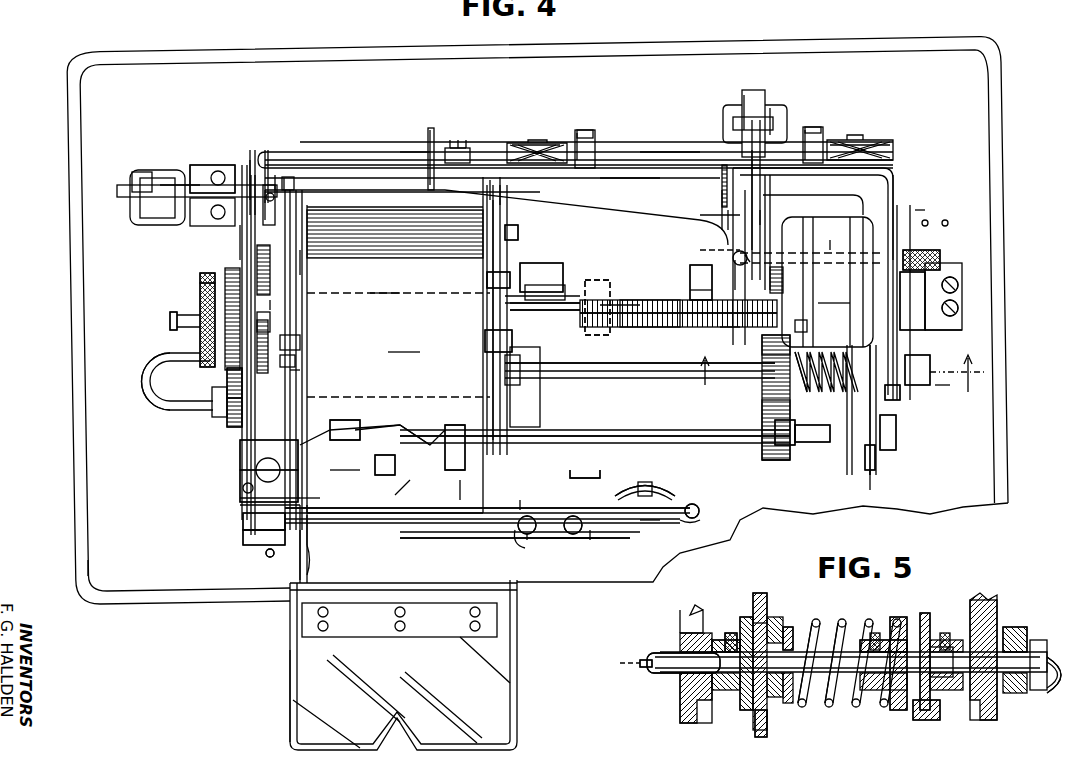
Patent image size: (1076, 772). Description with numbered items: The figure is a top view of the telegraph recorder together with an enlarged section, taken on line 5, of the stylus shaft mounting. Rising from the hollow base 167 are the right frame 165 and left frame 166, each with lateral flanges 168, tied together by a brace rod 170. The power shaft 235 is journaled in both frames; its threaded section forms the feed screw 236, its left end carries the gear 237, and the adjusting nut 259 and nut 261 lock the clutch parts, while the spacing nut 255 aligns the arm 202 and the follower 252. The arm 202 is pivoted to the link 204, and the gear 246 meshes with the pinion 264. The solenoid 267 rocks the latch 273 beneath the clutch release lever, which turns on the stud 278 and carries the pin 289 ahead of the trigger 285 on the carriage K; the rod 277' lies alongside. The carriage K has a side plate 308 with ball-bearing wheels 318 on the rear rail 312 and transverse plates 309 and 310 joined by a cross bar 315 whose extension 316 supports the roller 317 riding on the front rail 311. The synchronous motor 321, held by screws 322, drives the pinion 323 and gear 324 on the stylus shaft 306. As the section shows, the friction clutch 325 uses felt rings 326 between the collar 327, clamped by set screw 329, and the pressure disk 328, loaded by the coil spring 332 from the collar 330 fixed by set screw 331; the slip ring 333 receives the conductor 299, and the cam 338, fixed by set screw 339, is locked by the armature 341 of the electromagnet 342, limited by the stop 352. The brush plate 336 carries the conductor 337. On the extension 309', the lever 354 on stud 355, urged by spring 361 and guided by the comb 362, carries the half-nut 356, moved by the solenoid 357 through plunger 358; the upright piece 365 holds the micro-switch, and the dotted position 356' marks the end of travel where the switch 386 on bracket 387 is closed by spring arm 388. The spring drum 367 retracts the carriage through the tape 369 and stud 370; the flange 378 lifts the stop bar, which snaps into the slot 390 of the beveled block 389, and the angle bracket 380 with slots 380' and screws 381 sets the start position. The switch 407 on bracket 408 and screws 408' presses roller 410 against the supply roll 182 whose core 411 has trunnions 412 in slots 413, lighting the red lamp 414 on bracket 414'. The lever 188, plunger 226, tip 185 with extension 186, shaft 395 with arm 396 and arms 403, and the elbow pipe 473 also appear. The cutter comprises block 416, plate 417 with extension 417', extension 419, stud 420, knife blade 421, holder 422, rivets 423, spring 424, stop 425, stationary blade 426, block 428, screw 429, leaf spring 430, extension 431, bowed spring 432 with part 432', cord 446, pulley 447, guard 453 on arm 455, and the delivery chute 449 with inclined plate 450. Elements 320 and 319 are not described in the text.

In FIG. 4, the solenoid 267 is at (135, 172).
In FIG. 4, the latch 273 is at (172, 190).
In FIG. 4, the follower 252 is at (250, 185).
In FIG. 4, the switch 386 is at (265, 190).
In FIG. 4, the spring arm 388 is at (278, 175).
In FIG. 4, the trigger 285 is at (435, 150).
In FIG. 4, the bracket 387 is at (470, 130).
In FIG. 4, the ball-bearing wheels 318 is at (850, 142).
In FIG. 4, the block 320 is at (810, 130).
In FIG. 4, the rear rail 312 is at (665, 148).
In FIG. 4, the plunger 358 is at (742, 100).
In FIG. 4, the solenoid 357 is at (785, 108).
In FIG. 4, the carriage K is at (895, 175).
In FIG. 4, the transverse plate 310 is at (893, 205).
In FIG. 5, the transverse plate 310 is at (990, 612).
In FIG. 4, the screws 322 is at (912, 228).
In FIG. 4, the comb 362 is at (740, 260).
In FIG. 4, the pin 289 is at (428, 175).
In FIG. 4, the rod 277' is at (402, 200).
In FIG. 4, the stud 278 is at (508, 185).
In FIG. 4, the side plate 308 is at (650, 180).
In FIG. 4, the spring 361 is at (735, 240).
In FIG. 4, the upright piece 365 is at (725, 212).
In FIG. 4, the lever 354 is at (760, 190).
In FIG. 4, the stud 355 is at (764, 215).
In FIG. 4, the brace rod 170 is at (510, 228).
In FIG. 4, the right frame 165 is at (500, 250).
In FIG. 4, the lateral flanges 168 is at (545, 262).
In FIG. 4, the extension 309' is at (693, 228).
In FIG. 4, the stud 370 is at (700, 250).
In FIG. 4, the spring drum 367 is at (940, 255).
In FIG. 4, the lateral flange 378 is at (920, 275).
In FIG. 4, the tape 369 is at (833, 236).
In FIG. 4, the switch 407 is at (560, 270).
In FIG. 4, the dotted position of half-nut 356' is at (606, 300).
In FIG. 4, the slot 390 is at (692, 277).
In FIG. 4, the beveled block 389 is at (692, 293).
In FIG. 4, the pinion 323 is at (785, 285).
In FIG. 4, the synchronous motor 321 is at (835, 293).
In FIG. 4, the slots 380' is at (972, 283).
In FIG. 4, the cam 338 is at (807, 325).
In FIG. 5, the cam 338 is at (905, 615).
In FIG. 4, the screws 381 is at (950, 316).
In FIG. 4, the angle bracket 380 is at (938, 333).
In FIG. 4, the slip ring 333 is at (930, 360).
In FIG. 5, the slip ring 333 is at (1012, 628).
In FIG. 4, the arm 202 is at (240, 230).
In FIG. 4, the link 204 is at (248, 252).
In FIG. 4, the adjusting nut 259 is at (205, 275).
In FIG. 4, the left frame 166 is at (300, 273).
In FIG. 4, the core 411 is at (376, 288).
In FIG. 4, the roller 410 is at (487, 278).
In FIG. 4, the bracket 408 is at (508, 296).
In FIG. 4, the nut 261 is at (200, 310).
In FIG. 4, the power shaft 235 is at (600, 326).
In FIG. 4, the spacing nut 255 is at (275, 300).
In FIG. 4, the gear 237 is at (272, 320).
In FIG. 4, the trunnions 412 is at (485, 340).
In FIG. 4, the screws 408' is at (531, 322).
In FIG. 4, the feed screw 236 is at (665, 326).
In FIG. 4, the transverse plate 309 is at (678, 328).
In FIG. 5, the transverse plate 309 is at (674, 698).
In FIG. 4, the slots 413 is at (298, 360).
In FIG. 4, the bracket 414' is at (325, 371).
In FIG. 4, the supply roll 182 is at (405, 341).
In FIG. 4, the half-nut 356 is at (698, 344).
In FIG. 4, the stylus shaft 306 is at (620, 372).
In FIG. 5, the stylus shaft 306 is at (665, 660).
In FIG. 4, the section line 5 is at (704, 378).
In FIG. 4, the gear 246 is at (228, 375).
In FIG. 4, the elbow pipe 473 is at (152, 405).
In FIG. 4, the arms 403 is at (455, 428).
In FIG. 4, the plunger 226 is at (375, 428).
In FIG. 4, the lever 188 is at (415, 440).
In FIG. 4, the cross bar 315 is at (765, 400).
In FIG. 4, the coil spring 332 is at (800, 395).
In FIG. 5, the coil spring 332 is at (852, 706).
In FIG. 4, the metal plate 336 is at (900, 392).
In FIG. 4, the conductor 337 is at (942, 387).
In FIG. 4, the electromagnet 342 is at (878, 412).
In FIG. 4, the armature 341 is at (896, 436).
In FIG. 5, the armature 341 is at (928, 722).
In FIG. 4, the pinion 264 is at (235, 430).
In FIG. 4, the red lamp 414 is at (242, 455).
In FIG. 4, the arm 396 is at (245, 478).
In FIG. 4, the rear extension 186 is at (395, 462).
In FIG. 4, the rotary shaft 395 is at (355, 472).
In FIG. 4, the block 428 is at (305, 500).
In FIG. 4, the stationary knife blade 426 is at (404, 490).
In FIG. 4, the tip 185 is at (464, 490).
In FIG. 4, the block 416 is at (535, 500).
In FIG. 4, the plate 417 is at (593, 464).
In FIG. 4, the extension 417' is at (539, 489).
In FIG. 4, the bowed spring 432 is at (665, 482).
In FIG. 4, the front rail 311 is at (668, 440).
In FIG. 4, the gear 324 is at (770, 445).
In FIG. 5, the gear 324 is at (770, 728).
In FIG. 4, the collar 319 is at (770, 465).
In FIG. 4, the roller 317 is at (790, 448).
In FIG. 4, the lateral extension 316 is at (820, 445).
In FIG. 4, the adjustable stop 352 is at (870, 485).
In FIG. 4, the retractile spring 424 is at (698, 508).
In FIG. 4, the cord 446 is at (243, 522).
In FIG. 4, the pulley 447 is at (243, 538).
In FIG. 4, the leaf spring 430 is at (268, 553).
In FIG. 4, the inclined plate 450 is at (298, 570).
In FIG. 4, the extension 431 is at (332, 536).
In FIG. 4, the knife blade 421 is at (405, 525).
In FIG. 4, the guard 453 is at (470, 538).
In FIG. 4, the stop 425 is at (547, 539).
In FIG. 4, the arm 455 is at (540, 548).
In FIG. 4, the extension 419 is at (585, 525).
In FIG. 4, the holder 422 is at (612, 547).
In FIG. 4, the stud 420 is at (650, 522).
In FIG. 4, the part of spring 432' is at (704, 524).
In FIG. 4, the rivets 423 is at (575, 540).
In FIG. 4, the screw 429 is at (332, 560).
In FIG. 4, the base 167 is at (178, 573).
In FIG. 4, the delivery chute 449 is at (288, 686).
In FIG. 5, the friction clutch 325 is at (735, 630).
In FIG. 5, the felt rings 326 is at (770, 582).
In FIG. 5, the set screw 329 is at (725, 638).
In FIG. 5, the pressure disk 328 is at (786, 628).
In FIG. 5, the set screw 331 is at (866, 628).
In FIG. 5, the collar 330 is at (885, 630).
In FIG. 5, the set screw 339 is at (940, 635).
In FIG. 5, the conductor 299 is at (1058, 695).
In FIG. 5, the collar 327 is at (745, 712).